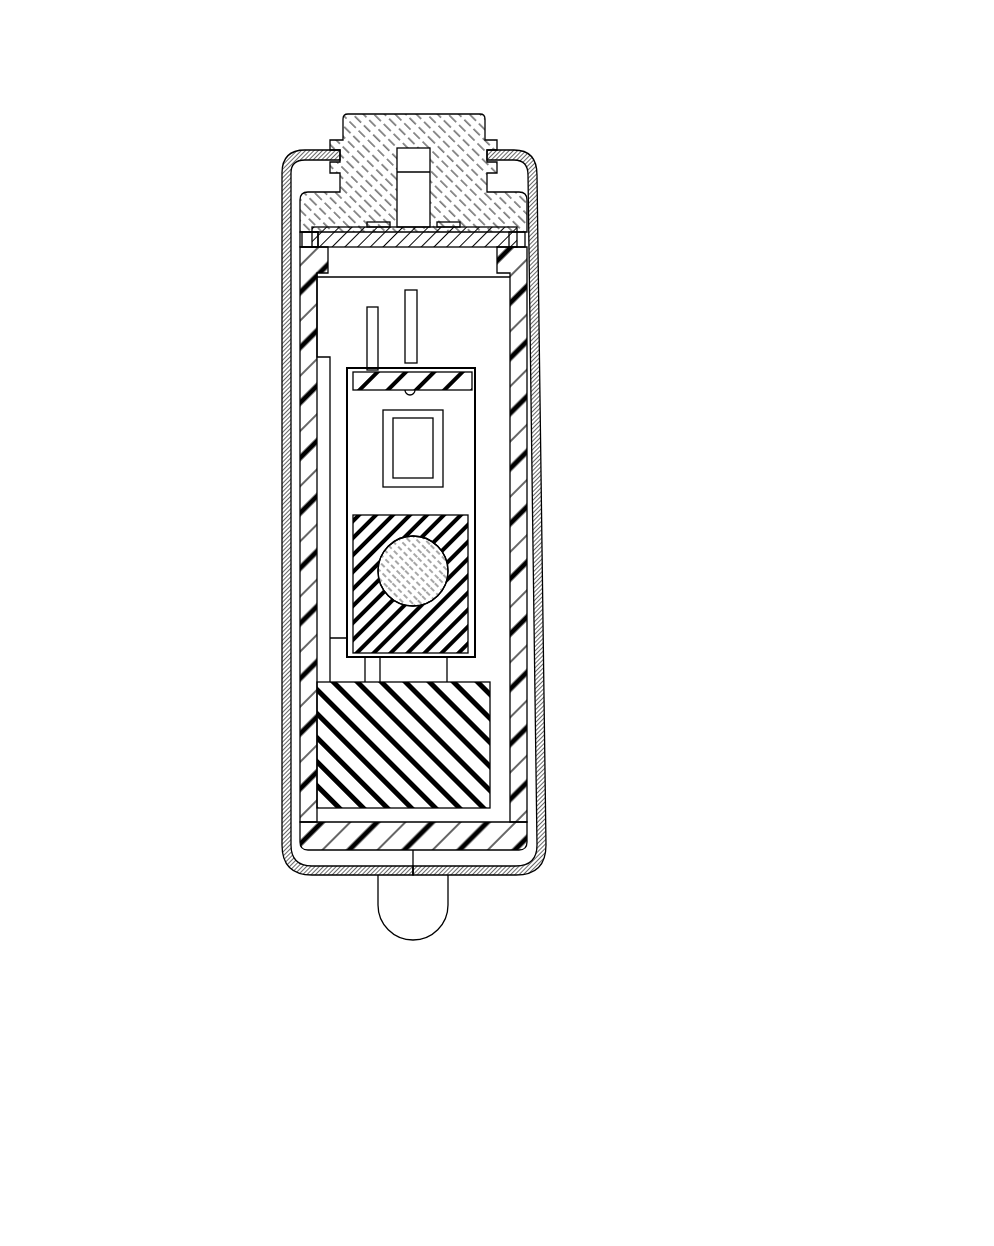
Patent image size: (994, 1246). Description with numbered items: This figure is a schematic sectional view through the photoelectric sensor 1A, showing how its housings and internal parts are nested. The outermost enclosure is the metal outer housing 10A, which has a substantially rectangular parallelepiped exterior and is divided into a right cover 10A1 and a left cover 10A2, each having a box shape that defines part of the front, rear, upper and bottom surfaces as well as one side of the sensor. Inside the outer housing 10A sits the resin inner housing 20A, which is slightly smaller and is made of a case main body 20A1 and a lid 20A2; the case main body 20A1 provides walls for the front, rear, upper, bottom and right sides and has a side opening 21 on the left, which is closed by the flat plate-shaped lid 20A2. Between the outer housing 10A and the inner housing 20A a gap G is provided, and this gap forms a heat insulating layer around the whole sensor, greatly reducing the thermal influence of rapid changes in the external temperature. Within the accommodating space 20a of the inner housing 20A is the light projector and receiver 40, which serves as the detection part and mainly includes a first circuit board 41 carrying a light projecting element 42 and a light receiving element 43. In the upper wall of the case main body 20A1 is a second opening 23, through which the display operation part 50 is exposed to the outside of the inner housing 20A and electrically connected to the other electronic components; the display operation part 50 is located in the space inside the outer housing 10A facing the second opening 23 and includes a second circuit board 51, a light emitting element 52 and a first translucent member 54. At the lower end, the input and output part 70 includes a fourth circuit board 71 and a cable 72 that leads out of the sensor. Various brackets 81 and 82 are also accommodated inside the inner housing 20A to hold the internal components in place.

The photoelectric sensor 1A is at (678, 75).
The outer housing 10A is at (412, 512).
The right cover 10A1 is at (288, 293).
The left cover 10A2 is at (541, 292).
The inner housing 20A is at (412, 548).
The case main body 20A1 is at (308, 380).
The lid 20A2 is at (522, 374).
The accommodating space 20a is at (483, 333).
The side opening 21 is at (500, 822).
The second opening 23 is at (332, 247).
The light projector and receiver 40 is at (480, 494).
The first circuit board 41 is at (457, 430).
The light projecting element 42 is at (413, 571).
The light receiving element 43 is at (412, 447).
The display operation part 50 is at (340, 111).
The second circuit board 51 is at (470, 241).
The light emitting element 52 is at (378, 224).
The first translucent member 54 is at (413, 130).
The input and output part 70 is at (461, 913).
The fourth circuit board 71 is at (372, 333).
The cable 72 is at (413, 907).
The bracket 81 is at (467, 748).
The bracket 82 is at (458, 541).
The gap G is at (313, 178).